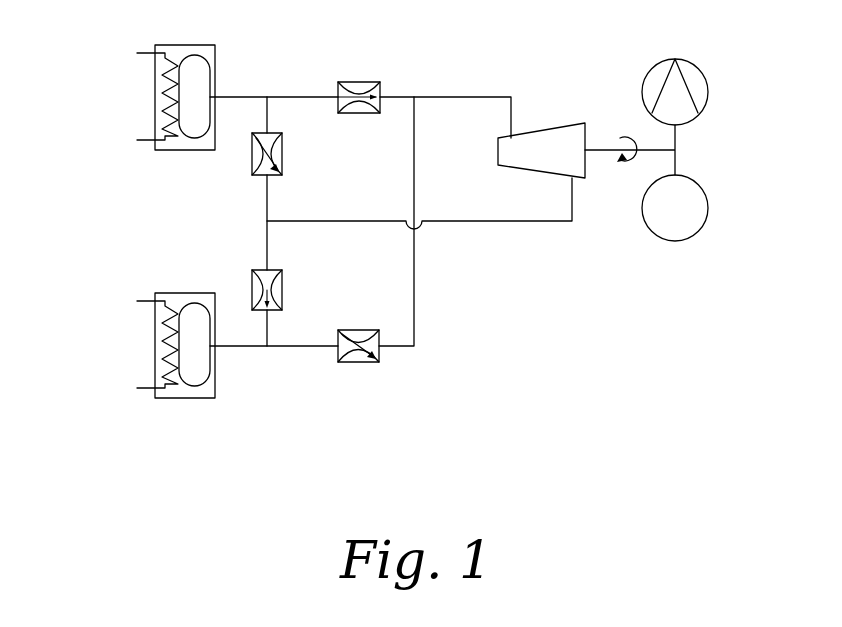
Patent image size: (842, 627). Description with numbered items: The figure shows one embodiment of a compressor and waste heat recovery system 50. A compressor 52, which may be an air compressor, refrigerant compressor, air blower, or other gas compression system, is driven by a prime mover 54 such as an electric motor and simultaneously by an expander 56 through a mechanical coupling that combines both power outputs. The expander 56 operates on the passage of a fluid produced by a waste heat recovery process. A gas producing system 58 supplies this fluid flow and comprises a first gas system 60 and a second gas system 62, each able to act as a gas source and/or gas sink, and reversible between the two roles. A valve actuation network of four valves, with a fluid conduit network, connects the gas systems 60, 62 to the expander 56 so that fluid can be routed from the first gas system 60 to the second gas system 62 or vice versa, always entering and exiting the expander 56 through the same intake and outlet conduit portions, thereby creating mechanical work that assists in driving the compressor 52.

The compressor and waste heat recovery system 50 is at (393, 420).
The compressor 52 is at (708, 92).
The prime mover 54 is at (708, 208).
The expander 56 is at (543, 123).
The gas producing system 58 is at (116, 239).
The first gas system 60 is at (195, 45).
The second gas system 62 is at (182, 293).